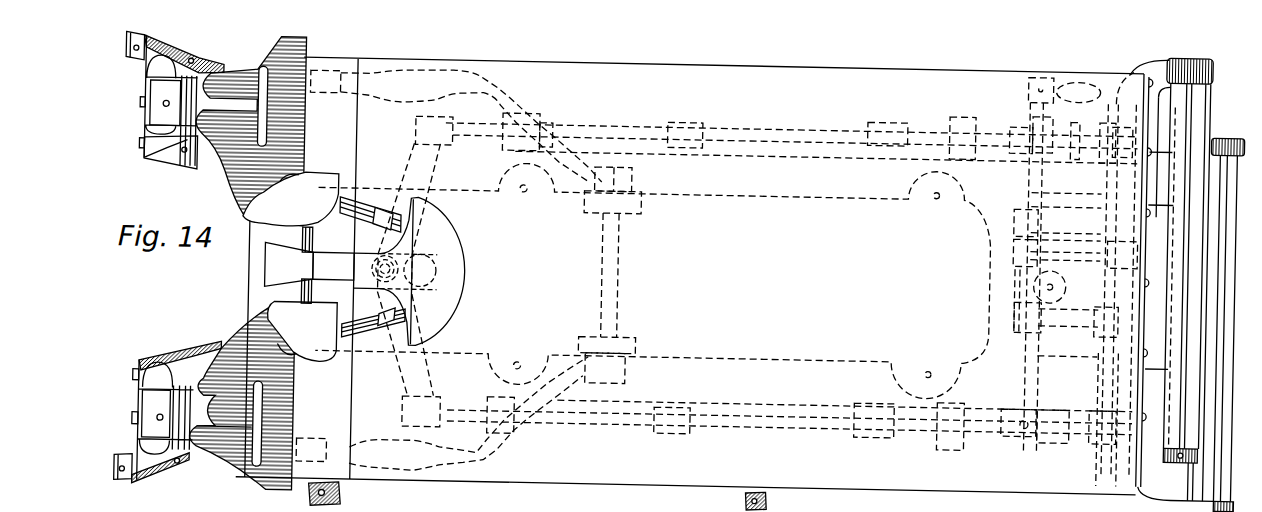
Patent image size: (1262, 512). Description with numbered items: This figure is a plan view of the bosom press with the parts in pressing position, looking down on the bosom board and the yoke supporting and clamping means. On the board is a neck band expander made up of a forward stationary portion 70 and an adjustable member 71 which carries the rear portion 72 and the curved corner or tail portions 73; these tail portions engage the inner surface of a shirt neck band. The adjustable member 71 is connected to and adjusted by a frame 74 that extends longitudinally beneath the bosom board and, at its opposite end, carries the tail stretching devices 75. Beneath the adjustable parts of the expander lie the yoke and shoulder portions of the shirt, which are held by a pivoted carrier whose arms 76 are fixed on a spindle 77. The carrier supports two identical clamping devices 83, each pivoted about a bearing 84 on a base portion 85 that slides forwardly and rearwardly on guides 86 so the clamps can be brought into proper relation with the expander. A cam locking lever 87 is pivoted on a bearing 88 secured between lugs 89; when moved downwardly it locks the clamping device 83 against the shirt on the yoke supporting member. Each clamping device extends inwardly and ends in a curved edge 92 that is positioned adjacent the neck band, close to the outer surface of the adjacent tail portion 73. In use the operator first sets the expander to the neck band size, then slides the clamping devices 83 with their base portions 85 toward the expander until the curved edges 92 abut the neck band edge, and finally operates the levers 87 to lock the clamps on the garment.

The forward stationary portion 70 is at (455, 265).
The adjustable member 71 is at (334, 266).
The rear portion 72 is at (273, 263).
The corner or tail portions 73 is at (324, 267).
The frame 74 is at (433, 176).
The tail stretching devices 75 is at (1228, 161).
The arms 76 is at (457, 84).
The spindle 77 is at (607, 318).
The clamping devices 83 is at (290, 390).
The bearing 84 is at (142, 132).
The base portion 85 is at (170, 52).
The guides 86 is at (225, 70).
The cam locking lever 87 is at (302, 40).
The bearing 88 is at (142, 90).
The lugs 89 is at (190, 63).
The curved edge 92 is at (290, 176).